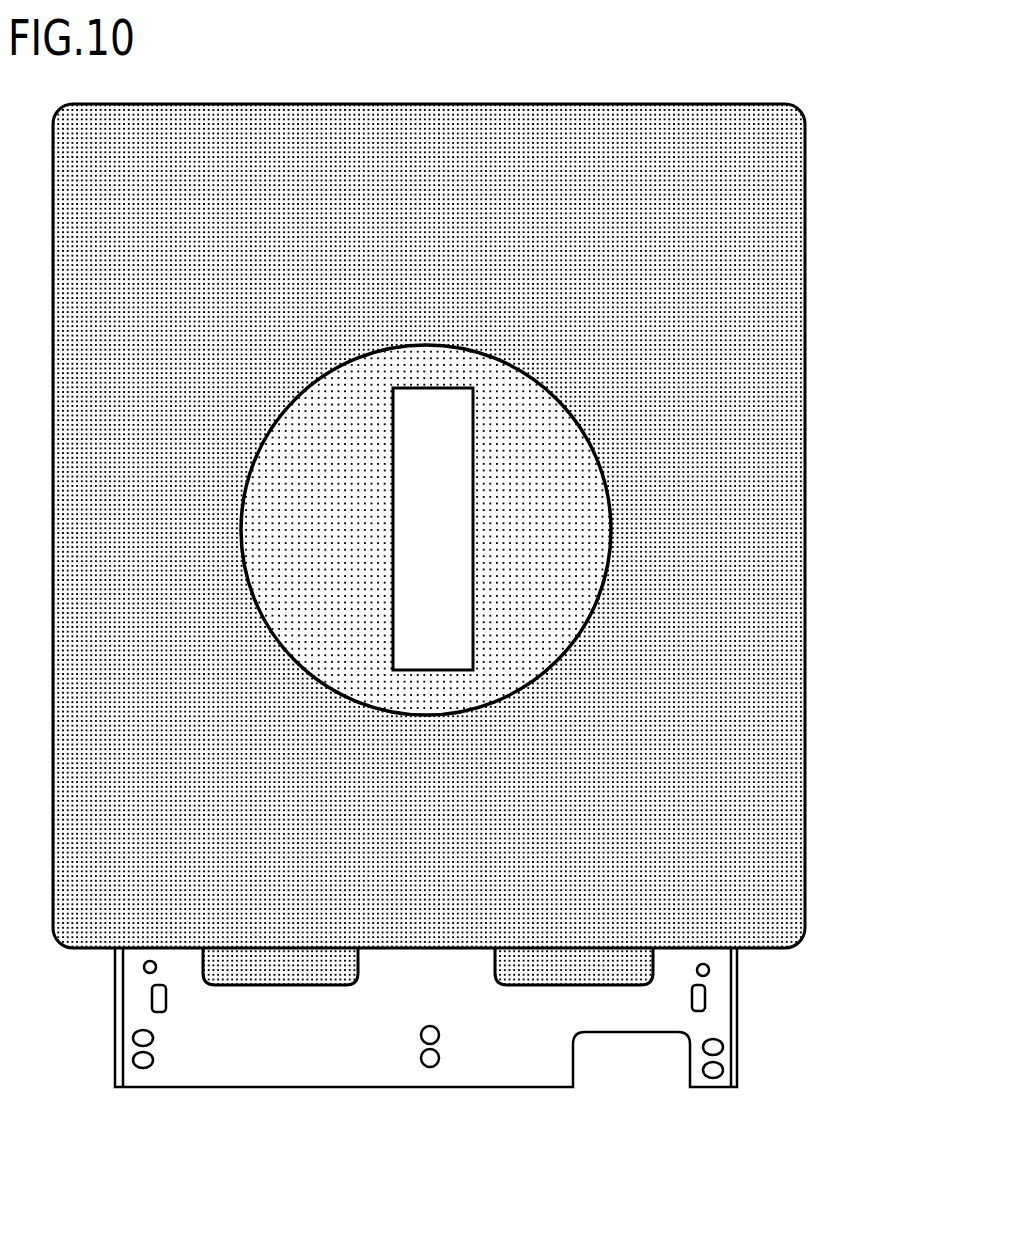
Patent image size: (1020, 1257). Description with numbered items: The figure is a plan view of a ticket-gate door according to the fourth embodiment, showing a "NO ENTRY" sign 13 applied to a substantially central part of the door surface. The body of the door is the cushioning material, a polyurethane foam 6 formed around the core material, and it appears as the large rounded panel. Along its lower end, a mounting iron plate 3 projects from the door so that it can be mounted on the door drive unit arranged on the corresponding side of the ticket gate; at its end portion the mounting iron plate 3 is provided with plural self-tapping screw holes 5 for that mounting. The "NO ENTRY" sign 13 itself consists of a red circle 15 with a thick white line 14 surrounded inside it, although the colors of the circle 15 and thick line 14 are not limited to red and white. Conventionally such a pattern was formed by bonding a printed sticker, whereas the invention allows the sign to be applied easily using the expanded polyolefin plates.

The mounting iron plate 3 is at (478, 1063).
The self-tapping screw holes 5 is at (145, 1068).
The polyurethane foam 6 is at (777, 615).
The "NO ENTRY" sign 13 is at (568, 484).
The thick white line 14 is at (448, 418).
The red circle 15 is at (550, 452).